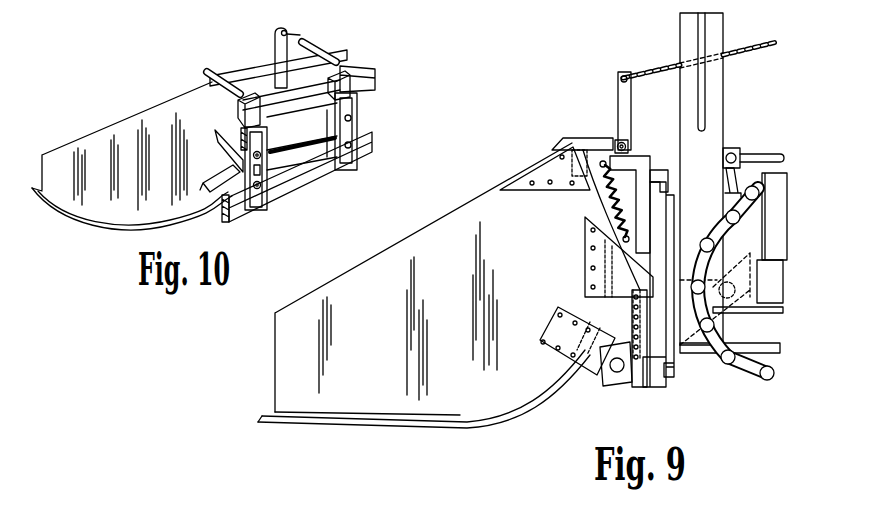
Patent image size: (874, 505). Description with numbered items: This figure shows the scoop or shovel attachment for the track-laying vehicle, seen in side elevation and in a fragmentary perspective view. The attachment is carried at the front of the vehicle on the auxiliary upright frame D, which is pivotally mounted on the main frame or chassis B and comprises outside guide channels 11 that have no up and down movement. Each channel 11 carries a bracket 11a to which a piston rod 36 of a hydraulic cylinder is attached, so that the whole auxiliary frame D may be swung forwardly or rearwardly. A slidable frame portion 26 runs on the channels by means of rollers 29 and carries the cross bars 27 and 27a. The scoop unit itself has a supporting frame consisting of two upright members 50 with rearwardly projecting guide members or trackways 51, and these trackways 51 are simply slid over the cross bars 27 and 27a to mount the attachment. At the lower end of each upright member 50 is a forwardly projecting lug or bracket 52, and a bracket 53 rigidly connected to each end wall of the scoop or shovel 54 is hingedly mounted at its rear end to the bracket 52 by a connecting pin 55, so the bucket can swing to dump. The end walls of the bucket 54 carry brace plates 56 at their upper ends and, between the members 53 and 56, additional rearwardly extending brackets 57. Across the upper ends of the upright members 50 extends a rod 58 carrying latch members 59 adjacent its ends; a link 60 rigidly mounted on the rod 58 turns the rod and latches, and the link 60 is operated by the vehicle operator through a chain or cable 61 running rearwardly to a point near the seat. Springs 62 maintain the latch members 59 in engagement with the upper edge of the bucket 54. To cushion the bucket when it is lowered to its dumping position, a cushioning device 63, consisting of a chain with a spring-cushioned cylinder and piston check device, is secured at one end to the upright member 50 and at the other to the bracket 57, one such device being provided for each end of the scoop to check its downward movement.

In FIG. 9, the outside guide channel 11 is at (724, 98).
In FIG. 9, the bracket 11a is at (737, 152).
In FIG. 10, the slidable frame portion 26 is at (358, 118).
In FIG. 10, the cross bar 27 is at (368, 80).
In FIG. 9, the cross bar 27 is at (653, 205).
In FIG. 10, the cross bar 27a is at (311, 174).
In FIG. 10, the roller 29 is at (258, 198).
In FIG. 9, the piston rod 36 is at (774, 158).
In FIG. 10, the upright member 50 is at (240, 110).
In FIG. 9, the upright member 50 is at (644, 156).
In FIG. 9, the guide member or trackway 51 is at (660, 170).
In FIG. 9, the lug or bracket 52 is at (629, 378).
In FIG. 10, the bracket 53 is at (214, 181).
In FIG. 9, the bracket 53 is at (560, 332).
In FIG. 10, the scoop or shovel 54 is at (169, 180).
In FIG. 9, the scoop or shovel 54 is at (460, 309).
In FIG. 9, the connecting pin 55 is at (601, 372).
In FIG. 9, the brace plate 56 is at (563, 165).
In FIG. 10, the bracket 57 is at (230, 151).
In FIG. 9, the bracket 57 is at (600, 260).
In FIG. 10, the rod 58 is at (270, 82).
In FIG. 9, the rod 58 is at (618, 142).
In FIG. 10, the latch member 59 is at (222, 73).
In FIG. 9, the latch member 59 is at (578, 138).
In FIG. 10, the link 60 is at (276, 46).
In FIG. 9, the link 60 is at (632, 104).
In FIG. 10, the chain or cable 61 is at (290, 33).
In FIG. 9, the chain or cable 61 is at (655, 76).
In FIG. 9, the spring 62 is at (606, 204).
In FIG. 9, the cushioning device 63 is at (628, 312).
In FIG. 9, the frame or chassis B is at (758, 322).
In FIG. 9, the auxiliary upright frame D is at (726, 80).